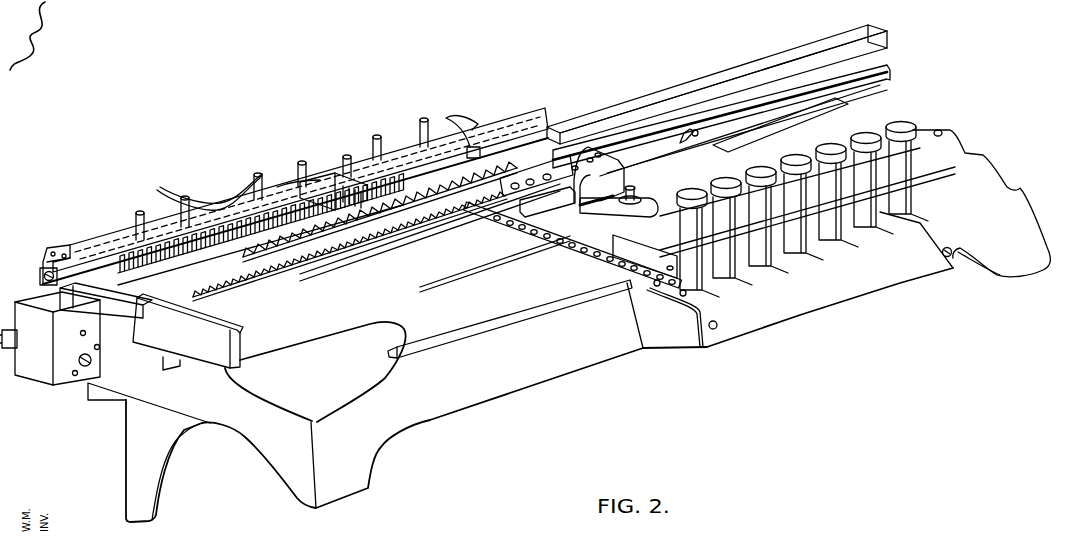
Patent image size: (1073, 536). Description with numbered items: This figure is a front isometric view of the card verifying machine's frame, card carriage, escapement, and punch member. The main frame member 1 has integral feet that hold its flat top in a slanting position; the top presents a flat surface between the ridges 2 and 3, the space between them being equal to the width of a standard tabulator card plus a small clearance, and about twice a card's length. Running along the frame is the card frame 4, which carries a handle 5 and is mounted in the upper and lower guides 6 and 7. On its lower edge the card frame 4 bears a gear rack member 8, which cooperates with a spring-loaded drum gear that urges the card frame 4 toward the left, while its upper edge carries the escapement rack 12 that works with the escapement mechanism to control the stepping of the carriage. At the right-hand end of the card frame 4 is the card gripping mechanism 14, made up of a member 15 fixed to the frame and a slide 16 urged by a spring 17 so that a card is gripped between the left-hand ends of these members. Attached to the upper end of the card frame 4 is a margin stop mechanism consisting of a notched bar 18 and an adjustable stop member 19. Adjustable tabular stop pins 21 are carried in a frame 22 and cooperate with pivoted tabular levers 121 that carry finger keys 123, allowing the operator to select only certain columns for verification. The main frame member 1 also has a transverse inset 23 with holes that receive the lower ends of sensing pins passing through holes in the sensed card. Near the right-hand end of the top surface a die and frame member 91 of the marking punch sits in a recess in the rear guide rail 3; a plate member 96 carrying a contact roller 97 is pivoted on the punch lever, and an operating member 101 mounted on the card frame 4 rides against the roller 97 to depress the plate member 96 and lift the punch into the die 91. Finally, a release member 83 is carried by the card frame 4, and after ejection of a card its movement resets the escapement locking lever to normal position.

The main frame member 1 is at (468, 405).
The ridge 2 is at (515, 320).
The ridge (rear guide rail) 3 is at (380, 255).
The card frame 4 is at (120, 307).
The handle 5 is at (242, 350).
The upper guide 6 is at (632, 106).
The lower guide 7 is at (890, 70).
The gear rack member 8 is at (330, 262).
The escapement rack 12 is at (263, 256).
The card gripping mechanism 14 is at (646, 197).
The member 15 is at (642, 160).
The slide 16 is at (623, 217).
The spring 17 is at (607, 197).
The notched bar 18 is at (97, 263).
The adjustable stop member 19 is at (327, 182).
The tabular stop pins 21 is at (140, 212).
The frame 22 is at (67, 247).
The inset 23 is at (623, 280).
The release member 83 is at (465, 117).
The die and frame member 91 is at (775, 128).
The plate member 96 is at (698, 131).
The contact roller 97 is at (684, 131).
The operating member 101 is at (427, 213).
The tabular levers 121 is at (905, 215).
The finger keys 123 is at (893, 120).